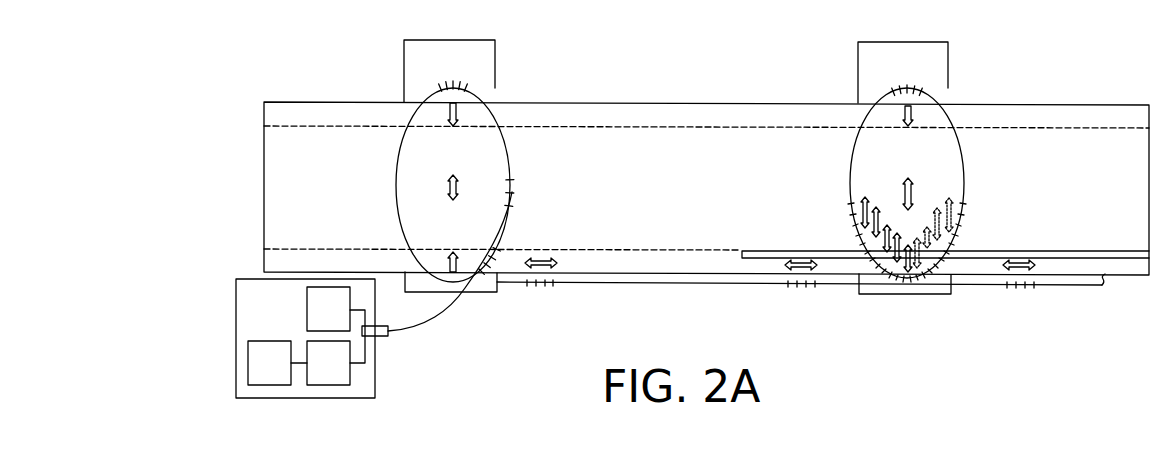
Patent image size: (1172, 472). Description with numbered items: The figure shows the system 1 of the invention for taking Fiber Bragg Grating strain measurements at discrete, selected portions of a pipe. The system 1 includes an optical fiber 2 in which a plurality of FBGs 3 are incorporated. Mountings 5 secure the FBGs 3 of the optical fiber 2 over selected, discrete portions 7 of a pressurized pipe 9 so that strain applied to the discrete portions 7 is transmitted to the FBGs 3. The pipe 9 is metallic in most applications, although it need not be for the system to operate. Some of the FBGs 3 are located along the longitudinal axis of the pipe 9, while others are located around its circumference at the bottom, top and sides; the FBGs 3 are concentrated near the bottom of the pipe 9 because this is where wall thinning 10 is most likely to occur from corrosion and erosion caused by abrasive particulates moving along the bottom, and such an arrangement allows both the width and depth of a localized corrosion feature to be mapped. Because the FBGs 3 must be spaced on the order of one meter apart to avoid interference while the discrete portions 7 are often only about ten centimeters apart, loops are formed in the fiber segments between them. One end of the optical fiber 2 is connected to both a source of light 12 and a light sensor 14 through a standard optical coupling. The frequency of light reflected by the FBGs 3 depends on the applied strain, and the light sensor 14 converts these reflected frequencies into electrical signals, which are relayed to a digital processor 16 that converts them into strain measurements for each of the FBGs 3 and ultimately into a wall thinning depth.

The system 1 is at (261, 338).
The optical fiber 2 is at (451, 313).
The FBGs 3 is at (512, 185).
The mountings 5 is at (404, 53).
The discrete portions 7 is at (542, 258).
The pressurized pipe 9 is at (1128, 277).
The wall thinning 10 is at (975, 252).
The source of light 12 is at (341, 320).
The light sensor 14 is at (341, 374).
The digital processor 16 is at (282, 374).